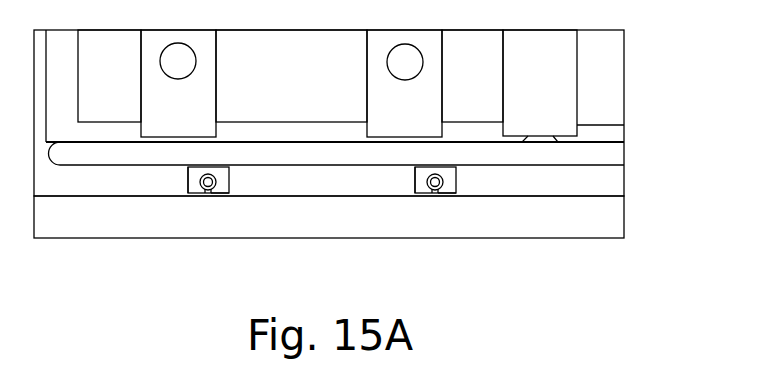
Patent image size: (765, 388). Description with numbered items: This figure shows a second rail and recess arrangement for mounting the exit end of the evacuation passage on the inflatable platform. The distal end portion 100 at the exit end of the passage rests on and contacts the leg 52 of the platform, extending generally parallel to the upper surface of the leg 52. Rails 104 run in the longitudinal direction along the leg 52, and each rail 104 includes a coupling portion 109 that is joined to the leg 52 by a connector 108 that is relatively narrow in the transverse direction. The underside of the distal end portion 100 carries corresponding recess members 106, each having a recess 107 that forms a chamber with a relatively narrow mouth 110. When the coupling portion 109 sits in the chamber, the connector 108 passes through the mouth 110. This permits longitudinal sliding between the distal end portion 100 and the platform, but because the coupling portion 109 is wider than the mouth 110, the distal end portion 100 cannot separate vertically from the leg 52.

The leg 52 is at (608, 222).
The distal end portion 100 is at (620, 158).
The rail 104 is at (220, 165).
The recess member 106 is at (191, 171).
The recess 107 is at (204, 191).
The connector 108 is at (209, 193).
The coupling portion 109 is at (200, 182).
The mouth 110 is at (213, 190).